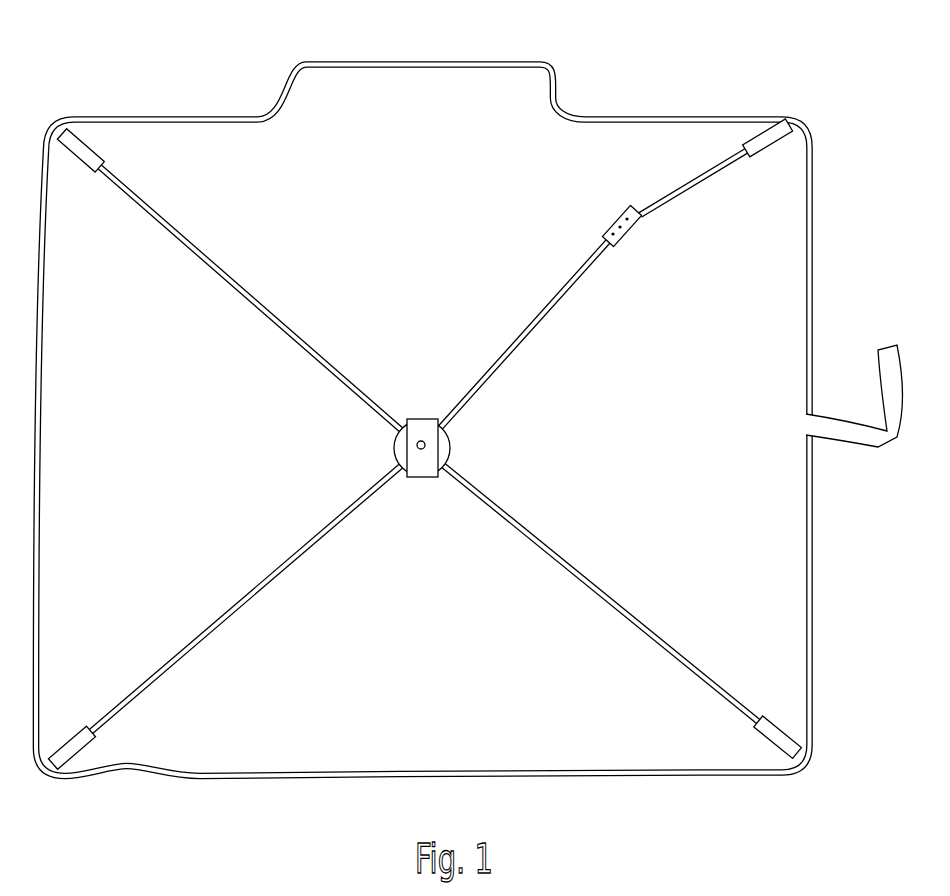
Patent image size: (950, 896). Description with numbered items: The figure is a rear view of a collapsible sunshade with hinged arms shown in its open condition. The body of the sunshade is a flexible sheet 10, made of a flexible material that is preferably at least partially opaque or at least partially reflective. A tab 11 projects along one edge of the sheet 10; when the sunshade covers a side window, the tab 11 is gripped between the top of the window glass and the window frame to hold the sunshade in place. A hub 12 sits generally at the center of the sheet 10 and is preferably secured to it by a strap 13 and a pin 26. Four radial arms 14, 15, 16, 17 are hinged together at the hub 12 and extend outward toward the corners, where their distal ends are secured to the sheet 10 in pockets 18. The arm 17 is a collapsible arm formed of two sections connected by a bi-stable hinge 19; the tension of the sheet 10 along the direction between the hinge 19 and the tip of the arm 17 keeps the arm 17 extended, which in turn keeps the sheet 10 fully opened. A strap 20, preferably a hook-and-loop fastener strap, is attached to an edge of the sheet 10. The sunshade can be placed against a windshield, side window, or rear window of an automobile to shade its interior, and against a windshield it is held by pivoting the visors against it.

The flexible sheet 10 is at (628, 133).
The tab 11 is at (424, 62).
The hub 12 is at (452, 445).
The strap 13 is at (423, 478).
The radial arm 14 is at (250, 295).
The radial arm 15 is at (252, 590).
The radial arm 16 is at (588, 588).
The collapsible arm 17 is at (550, 318).
The pocket 18 is at (92, 174).
The bi-stable hinge 19 is at (630, 232).
The strap 20 is at (858, 448).
The pin 26 is at (421, 441).